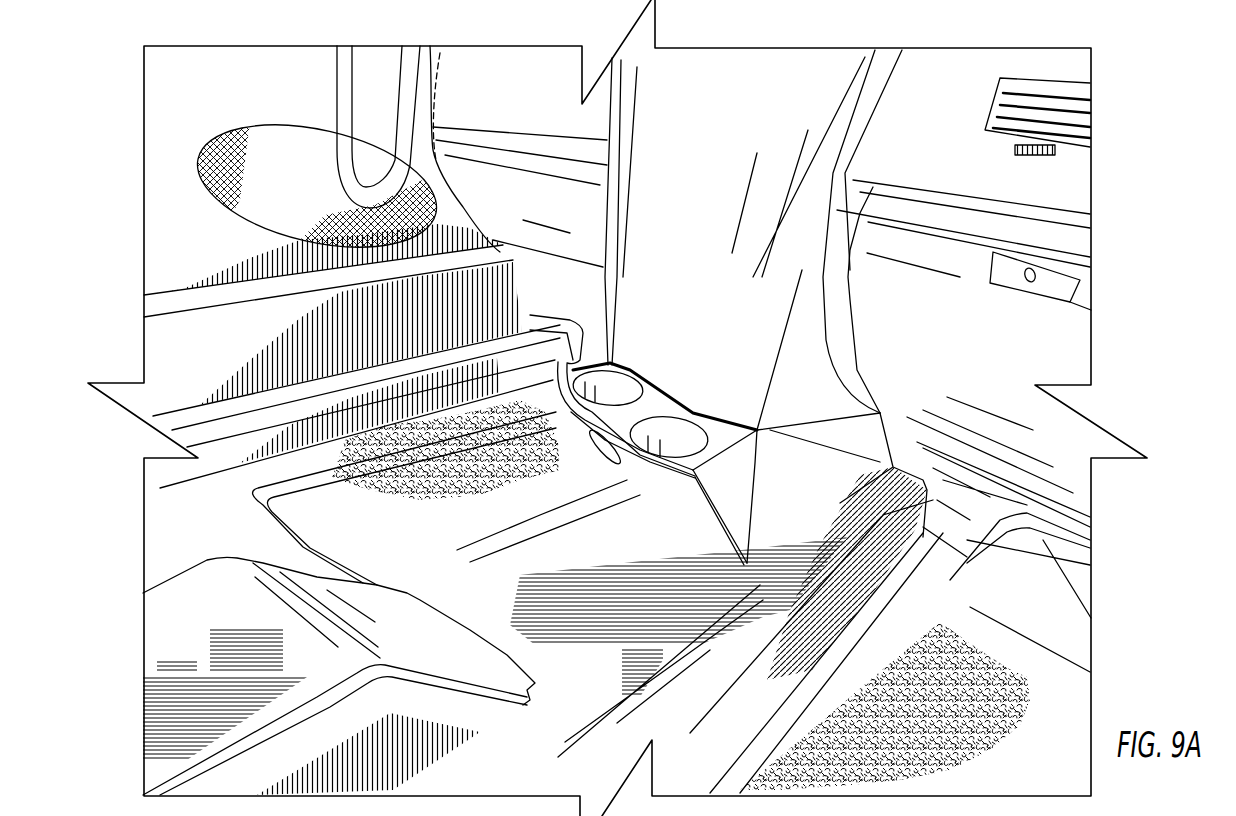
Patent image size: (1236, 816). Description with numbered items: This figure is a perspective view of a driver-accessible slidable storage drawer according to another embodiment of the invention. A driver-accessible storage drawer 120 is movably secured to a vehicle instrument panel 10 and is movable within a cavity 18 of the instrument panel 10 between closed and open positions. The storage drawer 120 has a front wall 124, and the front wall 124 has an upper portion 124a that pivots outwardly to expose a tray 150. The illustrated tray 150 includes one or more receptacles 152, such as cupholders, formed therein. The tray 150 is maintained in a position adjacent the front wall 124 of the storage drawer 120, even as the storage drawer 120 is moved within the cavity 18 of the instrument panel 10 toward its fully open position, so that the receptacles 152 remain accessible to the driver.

The vehicle instrument panel 10 is at (937, 105).
The cavity 18 is at (745, 528).
The driver-accessible storage drawer 120 is at (680, 504).
The front wall 124 is at (652, 483).
The upper portion 124a is at (560, 318).
The tray 150 is at (655, 405).
The receptacles 152 is at (612, 388).